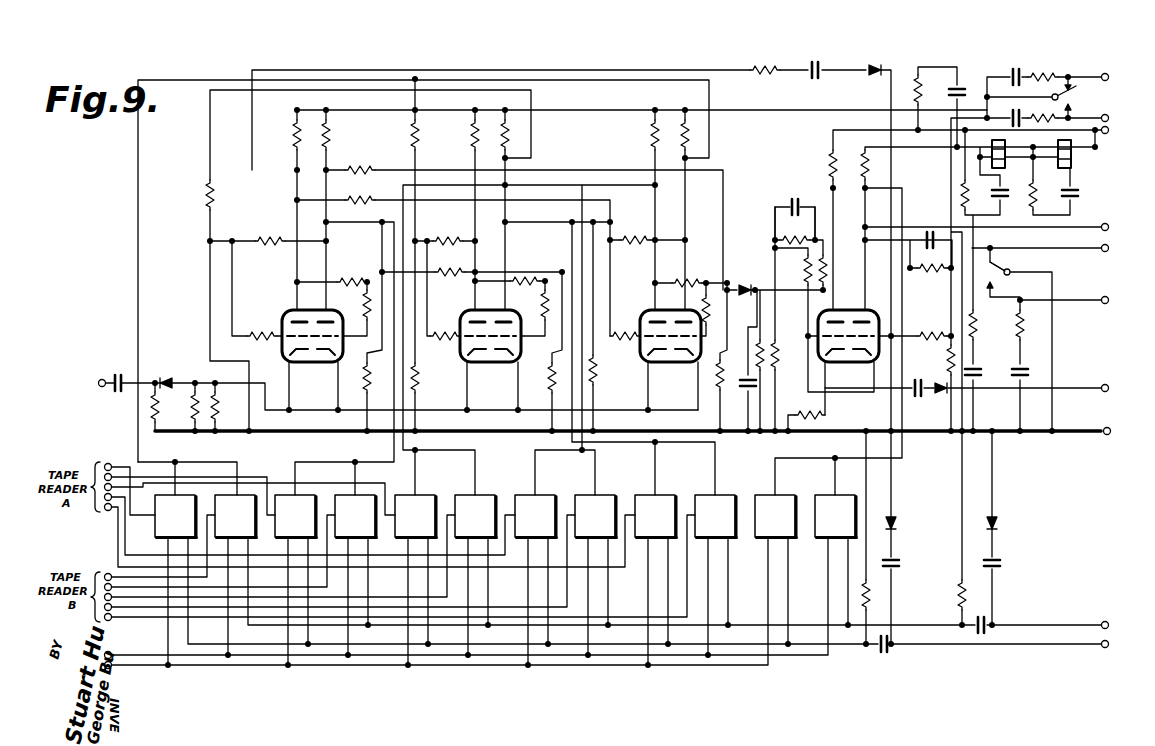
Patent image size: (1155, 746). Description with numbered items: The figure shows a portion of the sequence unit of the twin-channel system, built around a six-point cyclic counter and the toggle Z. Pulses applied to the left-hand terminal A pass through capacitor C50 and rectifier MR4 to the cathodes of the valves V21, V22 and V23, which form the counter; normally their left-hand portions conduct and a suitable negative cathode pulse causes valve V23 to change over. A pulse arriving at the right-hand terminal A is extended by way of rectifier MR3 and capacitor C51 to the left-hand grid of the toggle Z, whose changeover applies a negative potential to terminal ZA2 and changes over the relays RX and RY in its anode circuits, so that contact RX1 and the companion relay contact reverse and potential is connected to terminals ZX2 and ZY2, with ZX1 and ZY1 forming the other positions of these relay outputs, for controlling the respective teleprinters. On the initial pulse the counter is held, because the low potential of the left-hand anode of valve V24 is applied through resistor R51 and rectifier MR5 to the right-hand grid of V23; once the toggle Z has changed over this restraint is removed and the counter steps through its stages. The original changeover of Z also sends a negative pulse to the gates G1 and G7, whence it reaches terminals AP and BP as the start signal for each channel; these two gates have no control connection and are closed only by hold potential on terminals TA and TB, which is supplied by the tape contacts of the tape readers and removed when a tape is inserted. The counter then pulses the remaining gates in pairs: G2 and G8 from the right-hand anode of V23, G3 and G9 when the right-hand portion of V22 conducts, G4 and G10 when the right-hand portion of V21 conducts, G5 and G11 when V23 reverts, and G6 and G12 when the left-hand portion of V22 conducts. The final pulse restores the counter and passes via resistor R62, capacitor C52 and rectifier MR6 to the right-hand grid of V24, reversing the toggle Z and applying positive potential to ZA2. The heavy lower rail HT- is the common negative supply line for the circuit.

The capacitor C50 is at (115, 370).
The rectifier MR4 is at (178, 374).
The valve V21 is at (312, 326).
The valve V22 is at (490, 326).
The valve V23 is at (670, 326).
The valve V24 is at (848, 326).
The resistor R51 is at (842, 271).
The resistor R62 is at (763, 58).
The capacitor C52 is at (815, 60).
The rectifier MR6 is at (872, 58).
The rectifier MR5 is at (749, 280).
The toggle Z is at (795, 202).
The capacitor C51 is at (920, 378).
The rectifier MR3 is at (928, 398).
The relay RX is at (1012, 162).
The relay RY is at (1077, 162).
The relay contact RX1 is at (1014, 281).
The gate G1 is at (776, 516).
The gate G2 is at (176, 516).
The gate G3 is at (296, 516).
The gate G4 is at (416, 516).
The gate G5 is at (536, 516).
The gate G6 is at (656, 516).
The gate G7 is at (836, 516).
The gate G8 is at (236, 516).
The gate G9 is at (356, 516).
The gate G10 is at (476, 516).
The gate G11 is at (596, 516).
The gate G12 is at (716, 516).
The terminal ZY1 is at (1129, 78).
The terminal ZY2 is at (1129, 118).
The terminal ZA2 is at (1129, 228).
The terminal ZX1 is at (1129, 250).
The terminal ZX2 is at (1129, 302).
The terminal A is at (604, 389).
The negative supply line HT- is at (1126, 433).
The terminal BP is at (1125, 626).
The terminal AP is at (1125, 647).
The terminal TB is at (94, 655).
The terminal TA is at (94, 668).